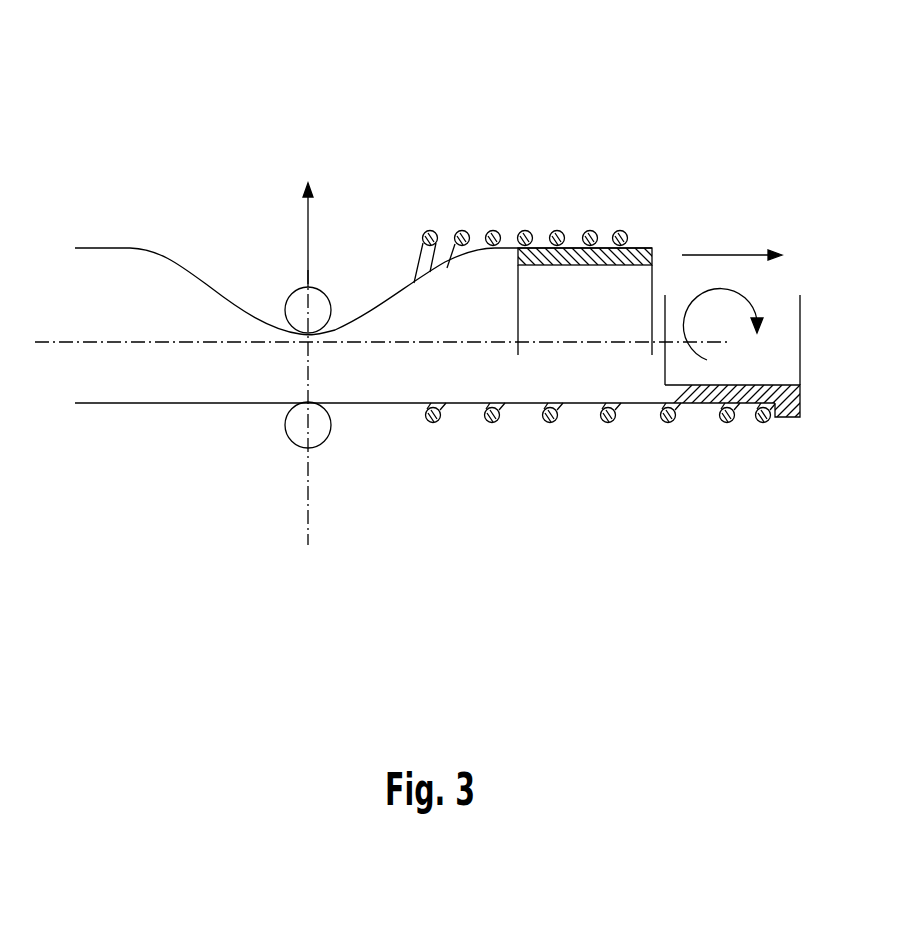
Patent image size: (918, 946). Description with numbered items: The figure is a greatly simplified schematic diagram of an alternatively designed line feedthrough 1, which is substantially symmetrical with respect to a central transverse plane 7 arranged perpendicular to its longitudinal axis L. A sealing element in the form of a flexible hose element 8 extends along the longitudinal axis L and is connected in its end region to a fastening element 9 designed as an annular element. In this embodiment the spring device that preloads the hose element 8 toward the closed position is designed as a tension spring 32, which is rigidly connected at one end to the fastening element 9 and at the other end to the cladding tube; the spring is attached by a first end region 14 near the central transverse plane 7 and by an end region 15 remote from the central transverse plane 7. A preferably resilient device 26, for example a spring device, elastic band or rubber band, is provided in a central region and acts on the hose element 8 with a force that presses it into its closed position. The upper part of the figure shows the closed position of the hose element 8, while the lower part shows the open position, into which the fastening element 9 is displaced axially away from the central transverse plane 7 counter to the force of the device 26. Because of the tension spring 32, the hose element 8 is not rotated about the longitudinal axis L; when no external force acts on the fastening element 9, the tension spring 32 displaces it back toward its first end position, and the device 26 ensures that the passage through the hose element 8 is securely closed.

The line feedthrough 1 is at (145, 125).
The central transverse plane 7 is at (308, 513).
The hose element 8 is at (168, 256).
The fastening element 9 is at (652, 248).
The first end region 14 is at (428, 231).
The end region 15 is at (620, 231).
The device 26 is at (330, 294).
The tension spring 32 is at (493, 231).
The longitudinal axis L is at (45, 342).